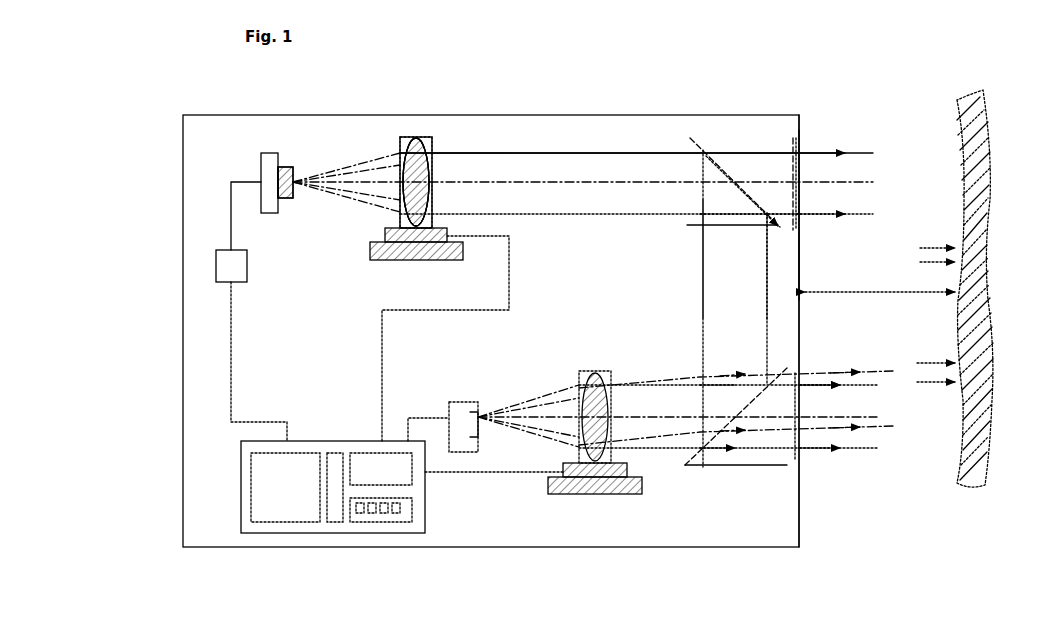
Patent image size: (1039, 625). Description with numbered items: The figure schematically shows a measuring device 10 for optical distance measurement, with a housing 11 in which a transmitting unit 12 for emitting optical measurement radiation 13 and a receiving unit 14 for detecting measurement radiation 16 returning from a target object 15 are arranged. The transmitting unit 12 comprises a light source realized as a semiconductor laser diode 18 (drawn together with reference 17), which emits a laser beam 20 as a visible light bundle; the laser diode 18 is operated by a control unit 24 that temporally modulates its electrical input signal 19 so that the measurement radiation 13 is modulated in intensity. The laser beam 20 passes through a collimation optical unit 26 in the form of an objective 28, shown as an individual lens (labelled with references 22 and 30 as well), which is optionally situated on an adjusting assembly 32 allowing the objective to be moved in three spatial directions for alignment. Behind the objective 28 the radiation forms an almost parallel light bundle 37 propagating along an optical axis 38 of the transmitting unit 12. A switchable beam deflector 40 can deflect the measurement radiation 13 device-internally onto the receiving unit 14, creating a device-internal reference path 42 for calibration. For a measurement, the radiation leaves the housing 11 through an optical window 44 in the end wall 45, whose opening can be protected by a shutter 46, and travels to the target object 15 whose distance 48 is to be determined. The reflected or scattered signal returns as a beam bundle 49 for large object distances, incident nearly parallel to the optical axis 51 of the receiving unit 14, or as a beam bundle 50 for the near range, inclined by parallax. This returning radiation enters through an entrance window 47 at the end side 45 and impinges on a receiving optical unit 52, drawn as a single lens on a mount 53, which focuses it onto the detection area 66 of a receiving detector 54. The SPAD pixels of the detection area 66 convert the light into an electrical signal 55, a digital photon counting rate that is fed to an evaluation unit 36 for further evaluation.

The measuring device 10 is at (240, 78).
The housing 11 is at (655, 127).
The transmitting unit 12 is at (333, 214).
The optical measurement radiation 13 is at (764, 170).
The receiving unit 14 is at (530, 395).
The target object 15 is at (950, 210).
The returning measurement radiation 16 is at (925, 375).
The light source 17 is at (290, 163).
The semiconductor laser diode 18 is at (285, 182).
The electrical input signal 19 is at (231, 173).
The laser beam 20 is at (303, 204).
The transmitting lens 22 is at (387, 228).
The control unit 24 is at (222, 267).
The collimation optical unit 26 is at (424, 141).
The objective 28 is at (416, 182).
The lens element 30 is at (416, 182).
The adjusting assembly 32 is at (385, 236).
The evaluation unit 36 is at (333, 533).
The parallel light bundle 37 is at (603, 195).
The optical axis 38 is at (603, 178).
The beam deflector 40 is at (716, 150).
The device-internal reference path 42 is at (766, 303).
The optical window 44 is at (797, 140).
The end wall 45 is at (800, 255).
The shutter 46 is at (786, 232).
The entrance window 47 is at (797, 455).
The distance 48 is at (882, 300).
The returning beam bundle 49 is at (863, 450).
The returning beam bundle 50 is at (855, 405).
The optical axis 51 is at (658, 395).
The receiving optical unit 52 is at (597, 371).
The lens mount 53 is at (637, 478).
The receiving detector 54 is at (463, 402).
The electrical signal 55 is at (412, 418).
The detection area 66 is at (473, 437).